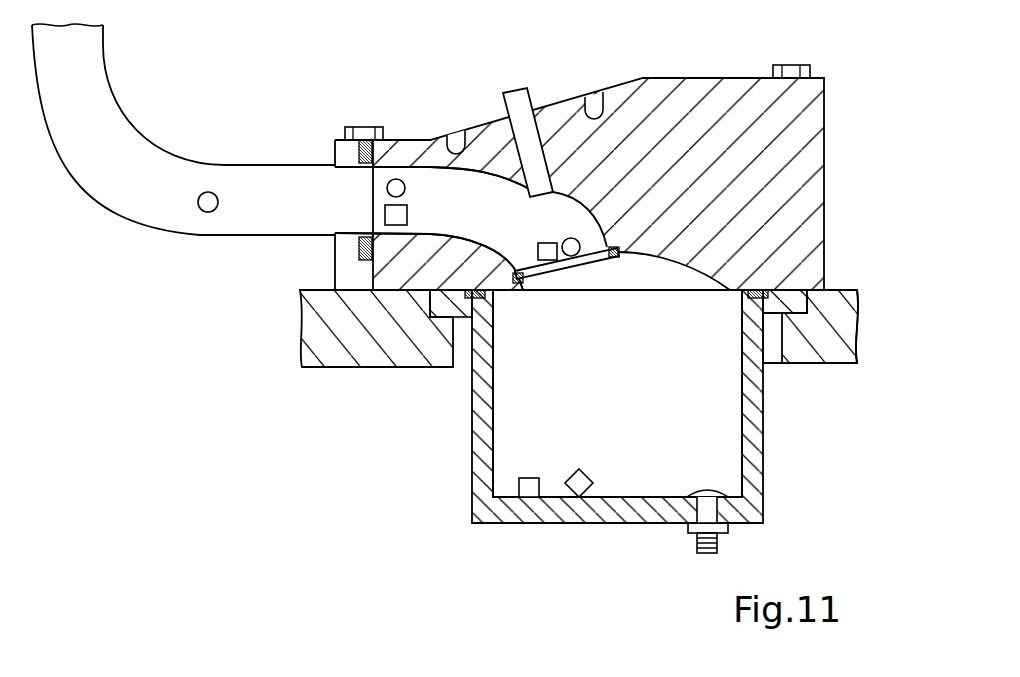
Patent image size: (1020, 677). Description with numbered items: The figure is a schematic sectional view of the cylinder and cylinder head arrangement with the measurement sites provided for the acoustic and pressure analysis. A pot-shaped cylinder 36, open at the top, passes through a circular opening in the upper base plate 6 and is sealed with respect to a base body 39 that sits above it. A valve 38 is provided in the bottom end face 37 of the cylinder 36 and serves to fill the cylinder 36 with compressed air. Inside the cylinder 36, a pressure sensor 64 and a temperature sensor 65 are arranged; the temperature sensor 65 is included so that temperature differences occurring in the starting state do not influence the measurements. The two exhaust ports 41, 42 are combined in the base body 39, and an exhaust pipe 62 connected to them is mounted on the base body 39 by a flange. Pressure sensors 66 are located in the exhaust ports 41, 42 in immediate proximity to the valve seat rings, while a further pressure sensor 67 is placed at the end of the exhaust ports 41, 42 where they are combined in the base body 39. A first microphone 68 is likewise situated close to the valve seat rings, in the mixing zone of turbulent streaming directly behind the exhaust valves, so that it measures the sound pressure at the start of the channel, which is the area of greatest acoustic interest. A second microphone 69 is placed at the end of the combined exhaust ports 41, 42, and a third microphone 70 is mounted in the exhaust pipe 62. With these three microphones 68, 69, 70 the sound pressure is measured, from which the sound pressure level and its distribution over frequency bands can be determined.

The upper base plate 6 is at (305, 329).
The cylinder 36 is at (670, 388).
The bottom end face 37 is at (625, 491).
The valve 38 is at (681, 540).
The base body 39 is at (800, 125).
The exhaust port 41 is at (435, 228).
The exhaust port 42 is at (528, 142).
The exhaust pipe 62 is at (138, 160).
The pressure sensor 64 is at (527, 500).
The temperature sensor 65 is at (578, 500).
The second pressure sensor 66 is at (537, 262).
The third pressure sensor 67 is at (388, 221).
The first microphone 68 is at (570, 257).
The second microphone 69 is at (393, 178).
The third microphone 70 is at (205, 215).